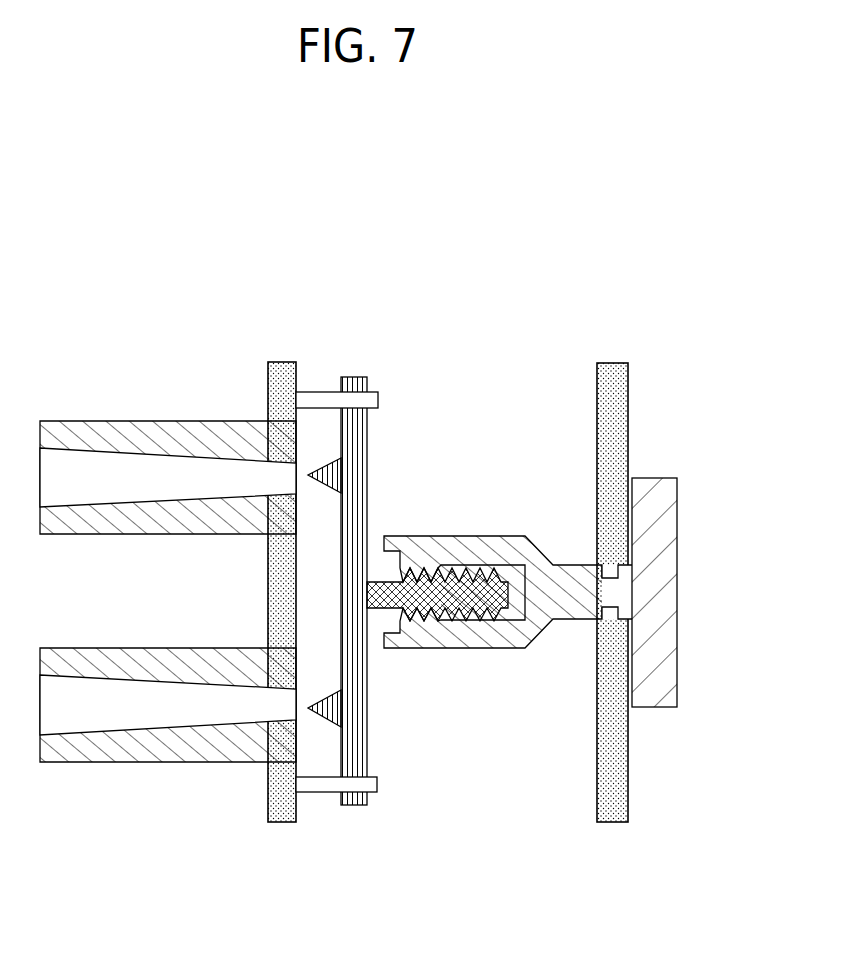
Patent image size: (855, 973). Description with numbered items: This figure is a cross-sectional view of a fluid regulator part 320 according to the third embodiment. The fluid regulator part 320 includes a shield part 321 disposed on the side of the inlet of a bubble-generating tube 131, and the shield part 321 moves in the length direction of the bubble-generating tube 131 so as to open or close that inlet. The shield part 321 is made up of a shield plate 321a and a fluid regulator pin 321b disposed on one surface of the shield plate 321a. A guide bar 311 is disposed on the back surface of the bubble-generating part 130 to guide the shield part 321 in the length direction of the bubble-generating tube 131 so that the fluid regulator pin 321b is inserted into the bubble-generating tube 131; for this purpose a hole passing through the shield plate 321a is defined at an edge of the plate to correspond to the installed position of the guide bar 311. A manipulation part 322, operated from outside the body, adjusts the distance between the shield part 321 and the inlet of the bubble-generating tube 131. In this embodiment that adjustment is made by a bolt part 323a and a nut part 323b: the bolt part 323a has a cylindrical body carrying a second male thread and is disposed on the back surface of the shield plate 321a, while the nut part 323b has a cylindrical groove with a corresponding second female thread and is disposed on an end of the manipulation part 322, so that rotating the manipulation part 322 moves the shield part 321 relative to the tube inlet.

The bubble-generating part 130 is at (255, 366).
The bubble-generating tube 131 is at (77, 421).
The guide bar 311 is at (313, 391).
The fluid regulator part 320 is at (645, 323).
The shield part 321 is at (389, 565).
The shield plate 321a is at (368, 760).
The fluid regulator pin 321b is at (325, 691).
The manipulation part 322 is at (653, 478).
The bolt part 323a is at (372, 577).
The nut part 323b is at (517, 643).